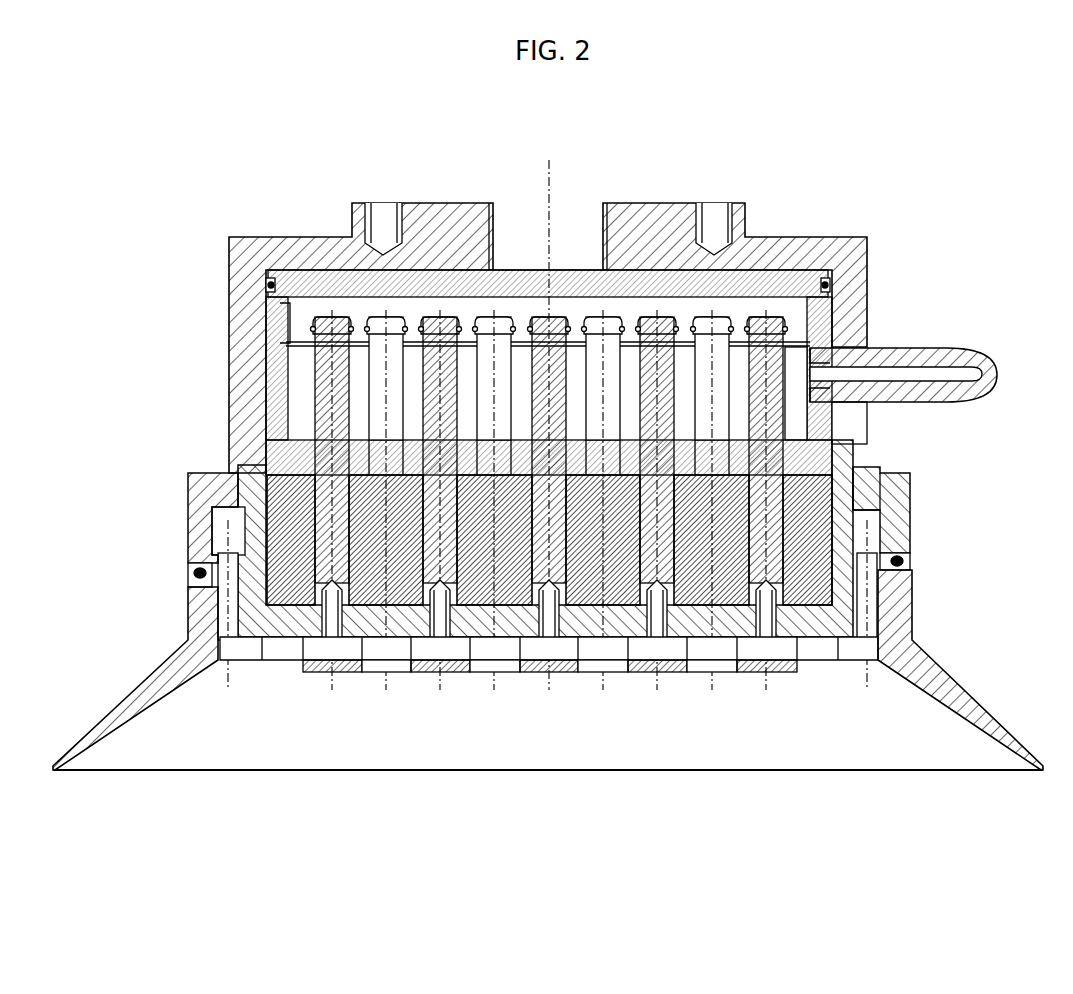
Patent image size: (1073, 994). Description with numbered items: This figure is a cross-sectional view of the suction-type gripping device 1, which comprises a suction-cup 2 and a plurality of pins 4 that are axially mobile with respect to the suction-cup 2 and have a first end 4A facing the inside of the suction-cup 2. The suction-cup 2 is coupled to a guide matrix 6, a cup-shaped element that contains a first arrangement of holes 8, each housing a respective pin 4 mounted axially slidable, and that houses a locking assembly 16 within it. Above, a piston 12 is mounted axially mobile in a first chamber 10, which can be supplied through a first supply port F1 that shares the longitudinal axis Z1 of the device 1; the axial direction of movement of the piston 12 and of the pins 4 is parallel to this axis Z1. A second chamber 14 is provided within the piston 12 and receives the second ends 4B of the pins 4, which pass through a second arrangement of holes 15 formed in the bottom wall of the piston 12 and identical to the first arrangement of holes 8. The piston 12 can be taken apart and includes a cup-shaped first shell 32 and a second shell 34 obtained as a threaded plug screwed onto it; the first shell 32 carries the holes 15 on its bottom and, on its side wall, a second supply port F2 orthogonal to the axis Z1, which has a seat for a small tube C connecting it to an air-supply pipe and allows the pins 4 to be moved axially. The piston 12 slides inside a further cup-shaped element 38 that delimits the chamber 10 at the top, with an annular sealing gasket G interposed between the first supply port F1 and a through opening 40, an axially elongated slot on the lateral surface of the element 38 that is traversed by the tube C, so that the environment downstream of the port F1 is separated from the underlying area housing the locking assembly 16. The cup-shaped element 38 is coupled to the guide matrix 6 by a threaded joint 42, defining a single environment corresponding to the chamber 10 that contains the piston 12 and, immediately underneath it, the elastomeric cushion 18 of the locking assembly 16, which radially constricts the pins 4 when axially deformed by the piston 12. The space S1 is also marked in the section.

The suction-type gripping device 1 is at (925, 195).
The suction-cup 2 is at (940, 728).
The pins 4 is at (800, 683).
The first end 4A is at (797, 669).
The second end 4B is at (778, 317).
The guide matrix 6 is at (290, 620).
The first arrangement of holes 8 is at (318, 630).
The first chamber 10 is at (833, 324).
The piston 12 is at (288, 368).
The second chamber 14 is at (800, 406).
The second arrangement of holes 15 is at (640, 460).
The locking assembly 16 is at (940, 467).
The cushion 18 is at (808, 568).
The first shell 32 is at (292, 453).
The second shell 34 is at (418, 280).
The cup-shaped element 38 is at (752, 258).
The through opening 40 is at (857, 414).
The threaded joint 42 is at (847, 489).
The annular sealing gasket G is at (270, 289).
The space S1 is at (222, 565).
The small tube C is at (937, 348).
The first supply port F1 is at (592, 215).
The second supply port F2 is at (984, 347).
The longitudinal axis Z1 is at (553, 192).